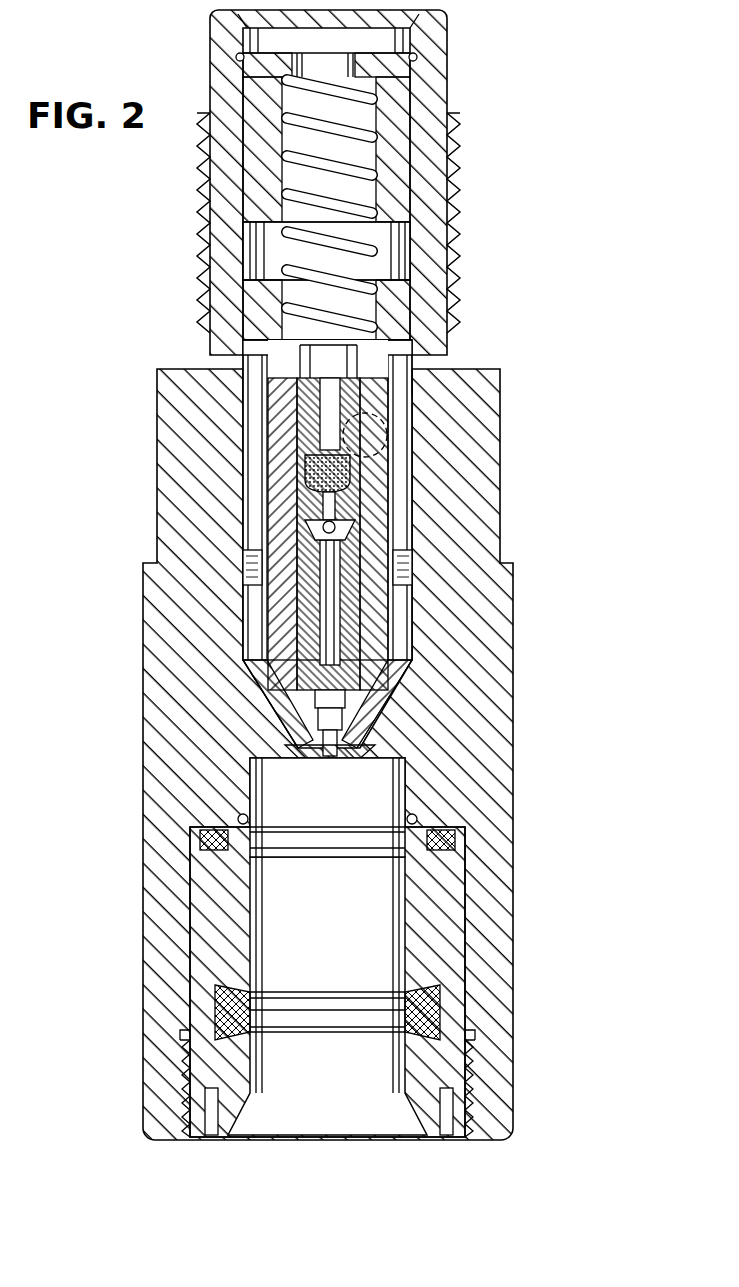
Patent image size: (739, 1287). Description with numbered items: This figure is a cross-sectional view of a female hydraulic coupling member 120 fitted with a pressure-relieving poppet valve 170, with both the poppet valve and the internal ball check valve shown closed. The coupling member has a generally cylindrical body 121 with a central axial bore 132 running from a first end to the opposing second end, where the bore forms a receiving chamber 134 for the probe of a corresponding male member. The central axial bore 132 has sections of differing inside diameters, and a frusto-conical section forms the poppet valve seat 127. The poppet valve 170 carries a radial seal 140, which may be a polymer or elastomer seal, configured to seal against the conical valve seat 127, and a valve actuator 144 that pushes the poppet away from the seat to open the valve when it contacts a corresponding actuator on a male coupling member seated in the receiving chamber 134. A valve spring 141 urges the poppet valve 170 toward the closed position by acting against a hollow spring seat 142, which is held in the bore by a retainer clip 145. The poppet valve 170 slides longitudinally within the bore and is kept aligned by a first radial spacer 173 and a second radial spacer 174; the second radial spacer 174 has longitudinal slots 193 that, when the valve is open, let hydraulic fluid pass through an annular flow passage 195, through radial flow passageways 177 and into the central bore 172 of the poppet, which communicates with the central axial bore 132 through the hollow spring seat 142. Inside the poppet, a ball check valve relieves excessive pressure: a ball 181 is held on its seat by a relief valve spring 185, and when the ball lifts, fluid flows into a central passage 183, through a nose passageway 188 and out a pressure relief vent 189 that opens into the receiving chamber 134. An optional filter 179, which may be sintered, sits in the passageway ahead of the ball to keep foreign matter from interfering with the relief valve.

The female hydraulic coupling member 120 is at (528, 223).
The body 121 is at (497, 640).
The poppet valve seat 127 is at (280, 708).
The central axial bore 132 is at (408, 262).
The receiving chamber 134 is at (327, 947).
The radial seal 140 is at (352, 740).
The valve spring 141 is at (385, 181).
The hollow spring seat 142 is at (418, 147).
The valve actuator 144 is at (347, 800).
The retainer clip 145 is at (417, 58).
The pressure-relieving poppet valve 170 is at (395, 678).
The central bore 172 is at (315, 348).
The first radial spacer 173 is at (406, 318).
The second radial spacer 174 is at (285, 592).
The radial flow passageways 177 is at (255, 360).
The filter 179 is at (308, 468).
The ball 181 is at (338, 528).
The central passage 183 is at (318, 622).
The relief valve spring 185 is at (380, 597).
The nose passageway 188 is at (305, 748).
The pressure relief vent 189 is at (365, 790).
The longitudinal slots 193 is at (243, 562).
The annular flow passage 195 is at (400, 395).